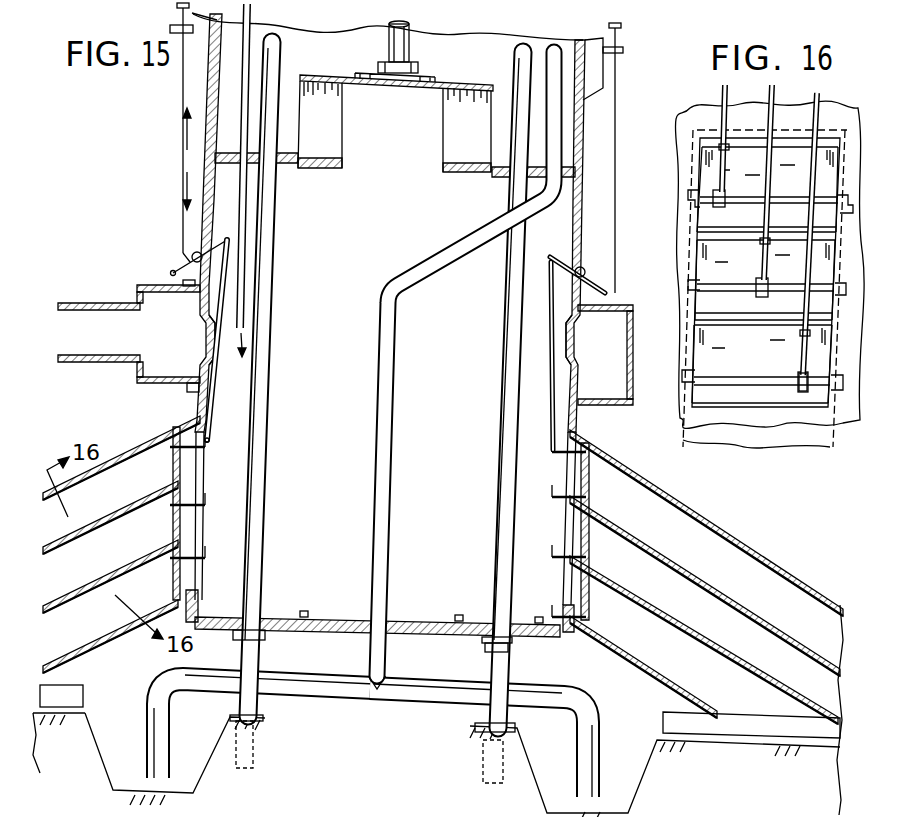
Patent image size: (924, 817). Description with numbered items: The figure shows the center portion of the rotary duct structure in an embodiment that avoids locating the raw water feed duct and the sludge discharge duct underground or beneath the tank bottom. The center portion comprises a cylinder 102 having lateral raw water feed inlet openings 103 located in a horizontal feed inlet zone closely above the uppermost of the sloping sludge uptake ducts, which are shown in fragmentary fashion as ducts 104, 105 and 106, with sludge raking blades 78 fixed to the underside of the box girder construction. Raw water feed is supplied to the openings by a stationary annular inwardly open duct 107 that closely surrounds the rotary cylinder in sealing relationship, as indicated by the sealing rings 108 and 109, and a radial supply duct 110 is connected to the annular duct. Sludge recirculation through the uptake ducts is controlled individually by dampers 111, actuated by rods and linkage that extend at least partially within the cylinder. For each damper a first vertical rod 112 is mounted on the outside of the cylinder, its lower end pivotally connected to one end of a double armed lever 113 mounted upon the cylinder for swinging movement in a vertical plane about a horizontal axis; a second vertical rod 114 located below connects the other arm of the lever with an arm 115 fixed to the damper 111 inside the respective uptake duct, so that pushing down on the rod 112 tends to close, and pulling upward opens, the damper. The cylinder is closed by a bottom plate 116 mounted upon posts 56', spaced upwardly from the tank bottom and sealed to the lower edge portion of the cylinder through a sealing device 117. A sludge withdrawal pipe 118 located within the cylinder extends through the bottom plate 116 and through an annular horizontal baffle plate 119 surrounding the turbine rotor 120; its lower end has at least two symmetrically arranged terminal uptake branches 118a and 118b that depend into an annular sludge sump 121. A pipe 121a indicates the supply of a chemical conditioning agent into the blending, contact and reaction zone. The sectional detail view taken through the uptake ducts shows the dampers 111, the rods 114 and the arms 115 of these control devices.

In FIG. 15, the cylinder 102 is at (577, 55).
In FIG. 15, the raw water feed inlet openings 103 is at (207, 340).
In FIG. 15, the sludge uptake duct 104 is at (107, 509).
In FIG. 16, the sludge uptake duct 104 is at (758, 185).
In FIG. 15, the sludge uptake duct 105 is at (82, 573).
In FIG. 16, the sludge uptake duct 105 is at (739, 278).
In FIG. 15, the sludge uptake duct 106 is at (87, 631).
In FIG. 16, the sludge uptake duct 106 is at (747, 368).
In FIG. 15, the annular inwardly open duct 107 is at (152, 284).
In FIG. 15, the sealing ring 108 is at (188, 390).
In FIG. 15, the sealing ring 109 is at (176, 288).
In FIG. 15, the radial supply duct 110 is at (92, 300).
In FIG. 15, the damper 111 is at (170, 470).
In FIG. 16, the damper 111 is at (705, 265).
In FIG. 15, the first vertical rod 112 is at (177, 150).
In FIG. 15, the double armed lever 113 is at (182, 235).
In FIG. 15, the second vertical rod 114 is at (216, 398).
In FIG. 16, the second vertical rod 114 is at (820, 100).
In FIG. 15, the arm 115 is at (152, 458).
In FIG. 16, the arm 115 is at (810, 362).
In FIG. 15, the bottom plate 116 is at (482, 624).
In FIG. 15, the sealing device 117 is at (200, 602).
In FIG. 15, the sludge withdrawal pipe 118 is at (387, 535).
In FIG. 15, the terminal uptake branch 118a is at (145, 700).
In FIG. 15, the terminal uptake branch 118b is at (646, 691).
In FIG. 15, the annular horizontal baffle plate 119 is at (500, 178).
In FIG. 15, the turbine rotor 120 is at (439, 91).
In FIG. 15, the annular sludge sump 121 is at (203, 735).
In FIG. 15, the pipe 121a is at (344, 213).
In FIG. 15, the posts 56' is at (376, 412).
In FIG. 15, the sludge raking blades 78 is at (738, 720).